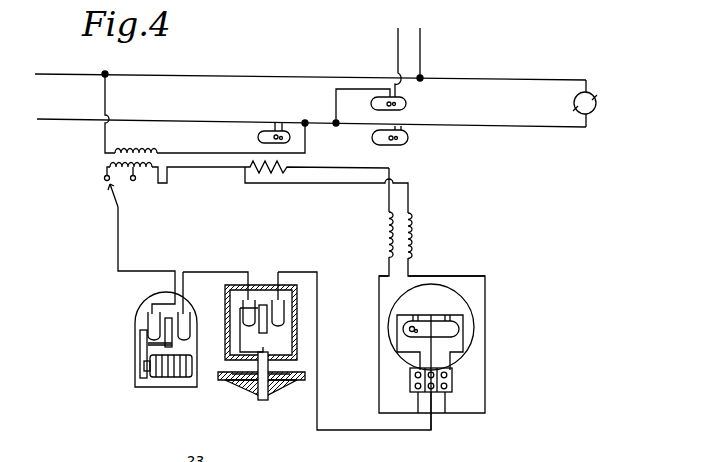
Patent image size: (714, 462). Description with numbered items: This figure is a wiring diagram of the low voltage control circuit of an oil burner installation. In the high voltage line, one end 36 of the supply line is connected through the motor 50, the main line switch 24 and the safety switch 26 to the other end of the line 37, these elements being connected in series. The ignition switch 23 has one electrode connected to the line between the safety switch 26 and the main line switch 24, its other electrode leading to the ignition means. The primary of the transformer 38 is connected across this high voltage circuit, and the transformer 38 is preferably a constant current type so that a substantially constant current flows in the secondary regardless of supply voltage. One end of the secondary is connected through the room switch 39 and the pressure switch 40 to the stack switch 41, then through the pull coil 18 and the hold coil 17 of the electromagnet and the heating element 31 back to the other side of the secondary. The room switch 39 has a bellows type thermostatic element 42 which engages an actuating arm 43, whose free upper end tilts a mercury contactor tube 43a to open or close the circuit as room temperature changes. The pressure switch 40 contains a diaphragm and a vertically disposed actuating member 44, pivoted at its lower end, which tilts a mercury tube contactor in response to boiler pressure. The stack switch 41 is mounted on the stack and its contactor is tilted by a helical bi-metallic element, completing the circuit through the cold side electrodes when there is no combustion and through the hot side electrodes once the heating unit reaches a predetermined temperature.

The supply line end 36 is at (76, 75).
The other end of the line 37 is at (71, 120).
The safety switch 26 is at (258, 137).
The ignition switch 23 is at (406, 105).
The main line switch 24 is at (408, 140).
The motor 50 is at (598, 96).
The transformer 38 is at (102, 160).
The heating element 31 is at (271, 175).
The pull coil 18 is at (386, 246).
The hold coil 17 is at (415, 248).
The room switch 39 is at (145, 350).
The mercury contactor tube 43a is at (148, 341).
The actuating arm 43 is at (140, 365).
The bellows type thermostatic element 42 is at (175, 377).
The actuating member 44 is at (240, 332).
The pressure switch 40 is at (270, 342).
The stack switch 41 is at (480, 336).